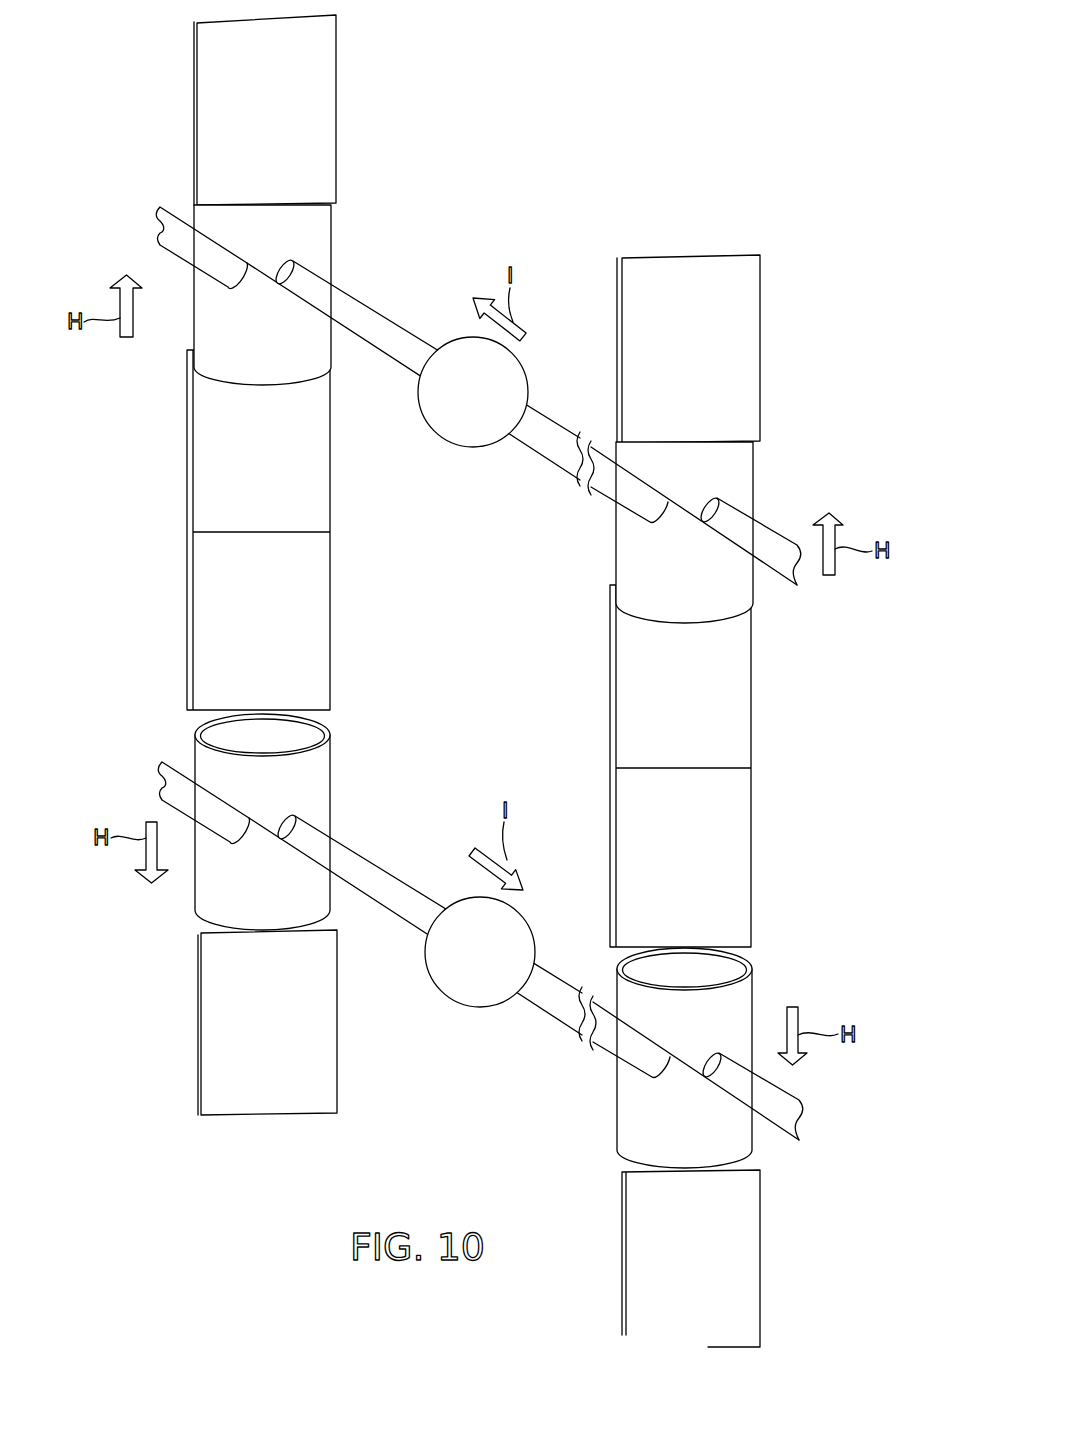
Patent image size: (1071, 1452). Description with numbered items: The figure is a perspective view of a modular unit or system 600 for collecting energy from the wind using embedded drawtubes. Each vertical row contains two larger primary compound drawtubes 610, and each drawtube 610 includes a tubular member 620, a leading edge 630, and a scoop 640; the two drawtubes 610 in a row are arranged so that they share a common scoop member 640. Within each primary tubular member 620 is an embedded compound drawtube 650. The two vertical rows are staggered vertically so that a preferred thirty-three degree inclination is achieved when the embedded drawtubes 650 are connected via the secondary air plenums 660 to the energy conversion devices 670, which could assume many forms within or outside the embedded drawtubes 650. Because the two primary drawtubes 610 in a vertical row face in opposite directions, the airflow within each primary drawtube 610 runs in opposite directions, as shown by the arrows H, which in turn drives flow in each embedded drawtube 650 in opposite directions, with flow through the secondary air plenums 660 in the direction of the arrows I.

The modular unit or system 600 is at (801, 169).
The primary compound drawtube 610 is at (98, 376).
The tubular member 620 is at (332, 245).
The leading edge 630 is at (336, 126).
The scoop 640 is at (330, 492).
The embedded compound drawtube 650 is at (258, 306).
The secondary air plenum 660 is at (565, 432).
The energy conversion device 670 is at (468, 448).